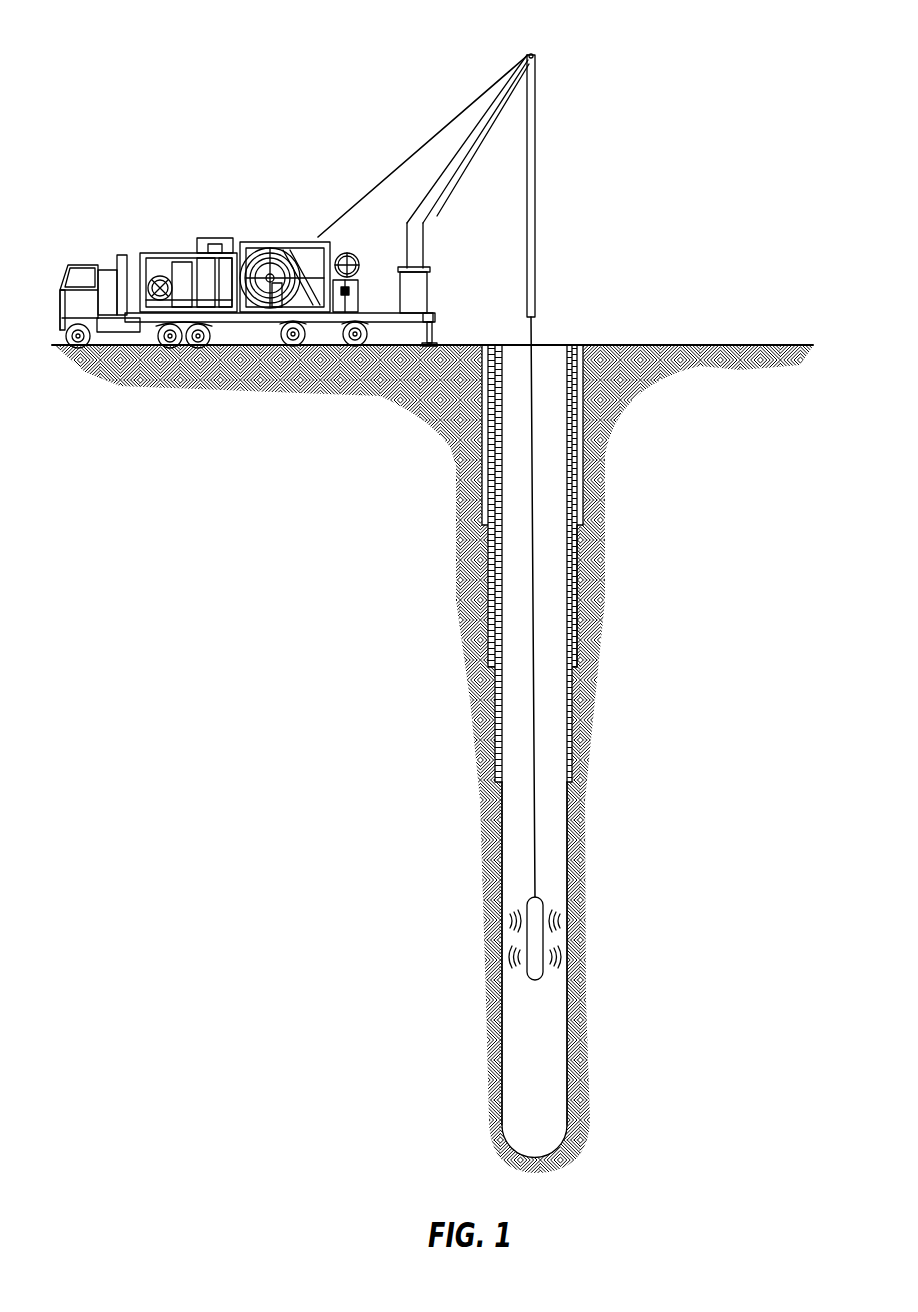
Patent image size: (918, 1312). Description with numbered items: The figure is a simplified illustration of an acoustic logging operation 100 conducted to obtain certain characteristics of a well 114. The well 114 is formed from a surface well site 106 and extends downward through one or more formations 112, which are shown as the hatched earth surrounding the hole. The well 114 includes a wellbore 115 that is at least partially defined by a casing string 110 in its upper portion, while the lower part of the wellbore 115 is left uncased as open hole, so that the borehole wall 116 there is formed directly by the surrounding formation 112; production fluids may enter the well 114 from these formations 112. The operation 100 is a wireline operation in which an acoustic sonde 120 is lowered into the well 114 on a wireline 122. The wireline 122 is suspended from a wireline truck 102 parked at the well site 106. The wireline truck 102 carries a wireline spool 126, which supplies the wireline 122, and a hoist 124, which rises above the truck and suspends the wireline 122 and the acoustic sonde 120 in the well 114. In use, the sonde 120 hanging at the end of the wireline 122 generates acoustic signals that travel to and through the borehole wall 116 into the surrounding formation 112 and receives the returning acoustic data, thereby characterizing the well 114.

The acoustic logging operation 100 is at (696, 70).
The wireline truck 102 is at (246, 268).
The well site 106 is at (593, 343).
The casing string 110 is at (490, 553).
The formation 112 is at (598, 678).
The well 114 is at (550, 462).
The wellbore 115 is at (500, 808).
The borehole wall 116 is at (577, 555).
The acoustic sonde 120 is at (543, 968).
The wireline 122 is at (535, 807).
The hoist 124 is at (535, 100).
The wireline spool 126 is at (268, 248).